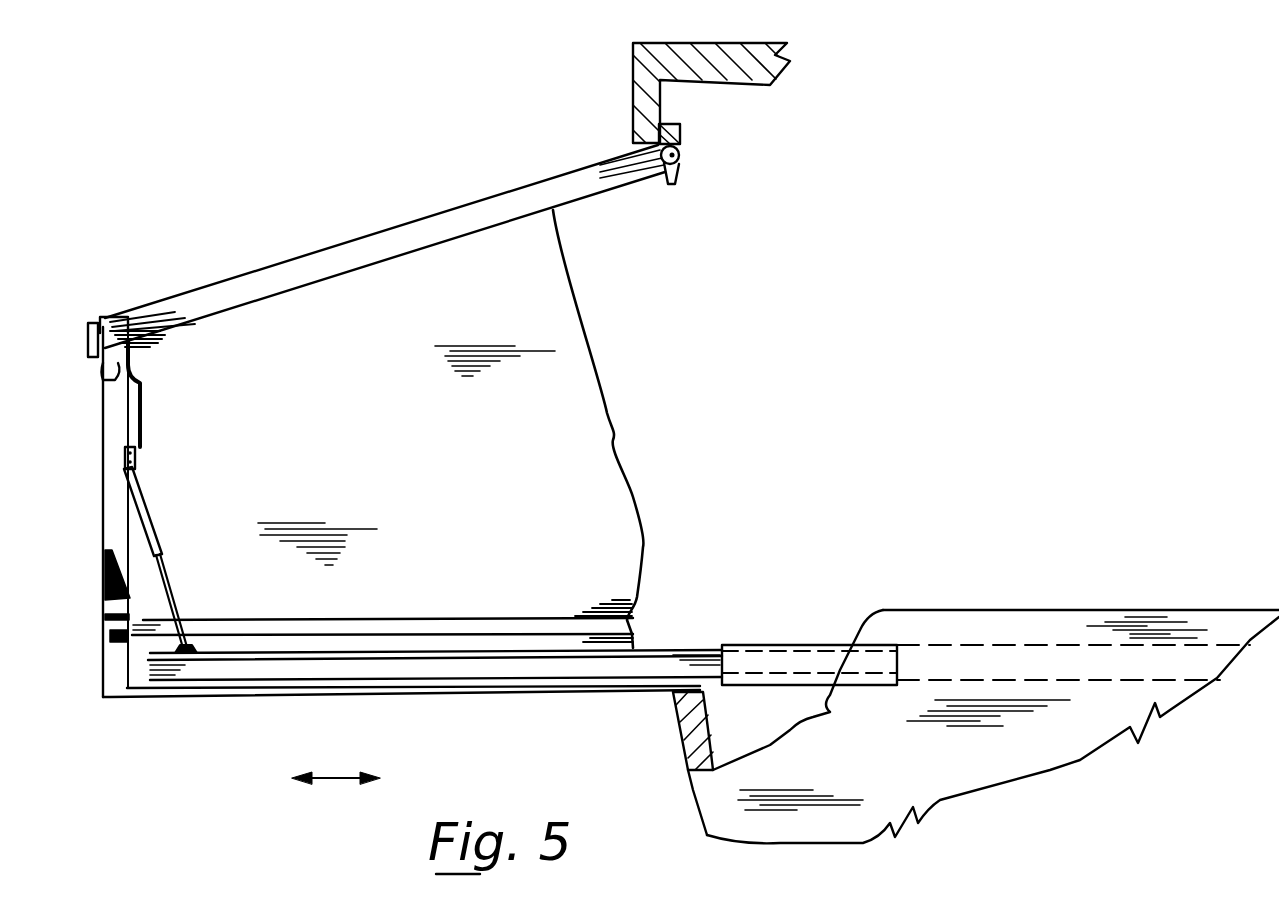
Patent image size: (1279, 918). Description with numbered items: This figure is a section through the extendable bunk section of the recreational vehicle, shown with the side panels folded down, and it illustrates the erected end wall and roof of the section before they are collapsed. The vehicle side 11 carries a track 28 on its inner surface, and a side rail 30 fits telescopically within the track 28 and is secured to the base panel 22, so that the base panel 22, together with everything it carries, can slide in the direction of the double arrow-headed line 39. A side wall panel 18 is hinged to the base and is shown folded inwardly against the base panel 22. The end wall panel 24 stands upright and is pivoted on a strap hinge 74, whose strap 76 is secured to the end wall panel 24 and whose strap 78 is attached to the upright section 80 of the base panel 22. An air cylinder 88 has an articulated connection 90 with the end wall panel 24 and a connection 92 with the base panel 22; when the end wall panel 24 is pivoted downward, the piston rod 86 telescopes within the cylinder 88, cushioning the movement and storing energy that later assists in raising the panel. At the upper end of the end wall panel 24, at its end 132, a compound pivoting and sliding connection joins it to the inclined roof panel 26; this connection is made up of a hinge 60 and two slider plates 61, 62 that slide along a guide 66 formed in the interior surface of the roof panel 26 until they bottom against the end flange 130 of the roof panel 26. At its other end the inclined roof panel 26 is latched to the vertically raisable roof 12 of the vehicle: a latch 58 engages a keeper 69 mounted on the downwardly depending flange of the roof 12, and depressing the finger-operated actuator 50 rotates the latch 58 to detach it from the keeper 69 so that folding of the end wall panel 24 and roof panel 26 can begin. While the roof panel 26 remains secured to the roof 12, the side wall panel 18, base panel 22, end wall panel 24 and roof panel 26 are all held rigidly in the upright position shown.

The side of the vehicle 11 is at (1095, 617).
The vertically raisable and lowerable roof 12 is at (713, 43).
The side wall panel 18 is at (567, 610).
The base panel 22 is at (578, 690).
The end wall panel 24 is at (100, 505).
The inclined roof panel 26 is at (392, 228).
The track 28 is at (805, 645).
The side rail 30 is at (463, 668).
The double arrow-headed line 39 is at (340, 778).
The finger-operated actuator 50 is at (682, 180).
The latch 58 is at (680, 153).
The hinge 60 is at (90, 335).
The slider plate 61 is at (112, 325).
The slider plate 62 is at (158, 345).
The guide 66 is at (152, 300).
The keeper 69 is at (672, 131).
The strap hinge 74 is at (125, 620).
The strap 76 is at (120, 601).
The strap 78 is at (120, 638).
The upright section of the base panel 80 is at (118, 700).
The piston rod 86 is at (185, 605).
The air cylinder 88 is at (163, 530).
The articulated connection 90 is at (135, 452).
The connection 92 is at (188, 650).
The end flange 130 is at (88, 355).
The end of the end wall panel 132 is at (131, 364).